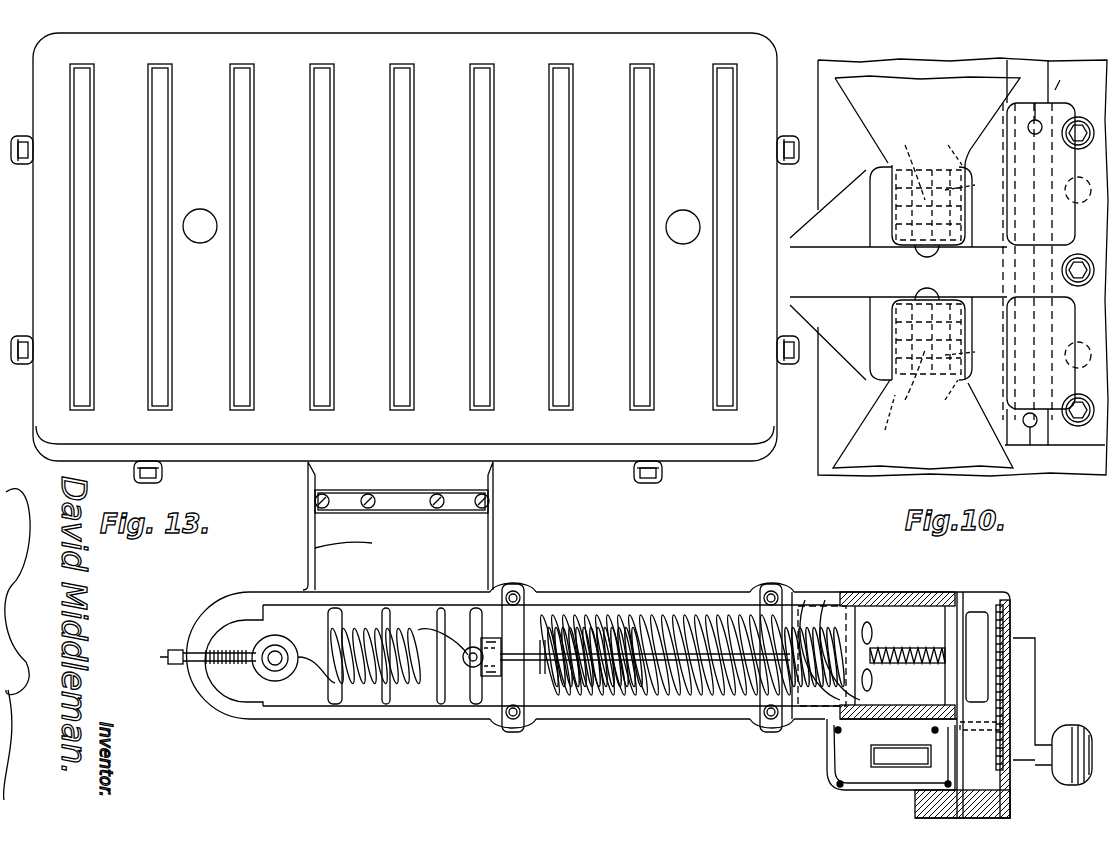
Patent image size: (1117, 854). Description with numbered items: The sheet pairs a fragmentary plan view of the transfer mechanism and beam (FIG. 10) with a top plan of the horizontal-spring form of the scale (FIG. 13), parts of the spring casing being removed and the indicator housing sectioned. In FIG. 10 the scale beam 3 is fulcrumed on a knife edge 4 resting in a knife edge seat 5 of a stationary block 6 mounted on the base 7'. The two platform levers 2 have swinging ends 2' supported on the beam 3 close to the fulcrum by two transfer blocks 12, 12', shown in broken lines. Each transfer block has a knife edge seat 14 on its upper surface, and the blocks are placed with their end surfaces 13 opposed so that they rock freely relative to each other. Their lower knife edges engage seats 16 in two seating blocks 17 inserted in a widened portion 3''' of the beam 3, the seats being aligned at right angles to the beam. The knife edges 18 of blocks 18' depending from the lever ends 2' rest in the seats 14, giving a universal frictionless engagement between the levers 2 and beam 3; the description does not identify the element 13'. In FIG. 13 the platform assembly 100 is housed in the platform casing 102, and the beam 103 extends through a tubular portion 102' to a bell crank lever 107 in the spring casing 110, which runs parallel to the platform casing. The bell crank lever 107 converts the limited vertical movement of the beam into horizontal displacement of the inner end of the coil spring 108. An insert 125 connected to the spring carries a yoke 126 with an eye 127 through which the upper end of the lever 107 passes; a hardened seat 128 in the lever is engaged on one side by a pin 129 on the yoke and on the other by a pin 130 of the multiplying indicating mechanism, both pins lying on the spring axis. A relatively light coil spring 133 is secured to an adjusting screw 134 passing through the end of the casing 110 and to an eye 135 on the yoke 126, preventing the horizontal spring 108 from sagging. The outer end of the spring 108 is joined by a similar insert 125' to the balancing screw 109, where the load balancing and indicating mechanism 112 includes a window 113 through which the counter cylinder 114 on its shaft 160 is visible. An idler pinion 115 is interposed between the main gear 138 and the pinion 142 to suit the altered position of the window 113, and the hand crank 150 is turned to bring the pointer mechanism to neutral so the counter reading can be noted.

In FIG. 13, the platform assembly 100 is at (372, 307).
In FIG. 13, the platform casing 102 is at (437, 526).
In FIG. 13, the tubular portion 102' is at (401, 544).
In FIG. 13, the beam 103 is at (402, 612).
In FIG. 13, the bell crank lever 107 is at (437, 640).
In FIG. 13, the coil spring 108 is at (688, 696).
In FIG. 13, the balancing screw 109 is at (907, 672).
In FIG. 13, the spring casing 110 is at (232, 706).
In FIG. 13, the load balancing and indicating mechanism 112 is at (925, 633).
In FIG. 13, the window 113 is at (888, 765).
In FIG. 13, the counter cylinder 114 is at (870, 760).
In FIG. 13, the idler pinion 115 is at (1008, 732).
In FIG. 13, the insert 125 is at (595, 629).
In FIG. 13, the insert 125' is at (815, 630).
In FIG. 13, the yoke 126 is at (498, 590).
In FIG. 13, the eye 127 is at (543, 640).
In FIG. 13, the hardened seat 128 is at (492, 674).
In FIG. 13, the pin 129 is at (474, 677).
In FIG. 13, the pin 130 is at (500, 680).
In FIG. 13, the coil spring 133 is at (355, 682).
In FIG. 13, the adjusting screw 134 is at (166, 665).
In FIG. 13, the eye 135 is at (462, 665).
In FIG. 13, the main gear 138 is at (1010, 622).
In FIG. 13, the pinion 142 is at (1008, 786).
In FIG. 13, the hand crank 150 is at (1090, 735).
In FIG. 13, the shaft 160 is at (960, 765).
In FIG. 10, the platform lever 2 is at (926, 272).
In FIG. 10, the swinging end 2' is at (906, 272).
In FIG. 10, the scale beam 3 is at (898, 233).
In FIG. 10, the widened portion 3''' is at (828, 359).
In FIG. 10, the knife edge 4 is at (1003, 280).
In FIG. 10, the knife edge seat 5 is at (1033, 430).
In FIG. 10, the stationary block 6 is at (1078, 110).
In FIG. 10, the base 7' is at (1061, 63).
In FIG. 10, the transfer block 12 is at (946, 147).
In FIG. 10, the transfer block 12' is at (917, 413).
In FIG. 10, the end surface 13 is at (914, 265).
In FIG. 10, the bar 13' is at (839, 169).
In FIG. 10, the knife edge seat 14 is at (958, 272).
In FIG. 10, the seat 16 is at (908, 267).
In FIG. 10, the seating block 17 is at (972, 268).
In FIG. 10, the knife edge 18 is at (977, 213).
In FIG. 10, the block 18' is at (868, 202).